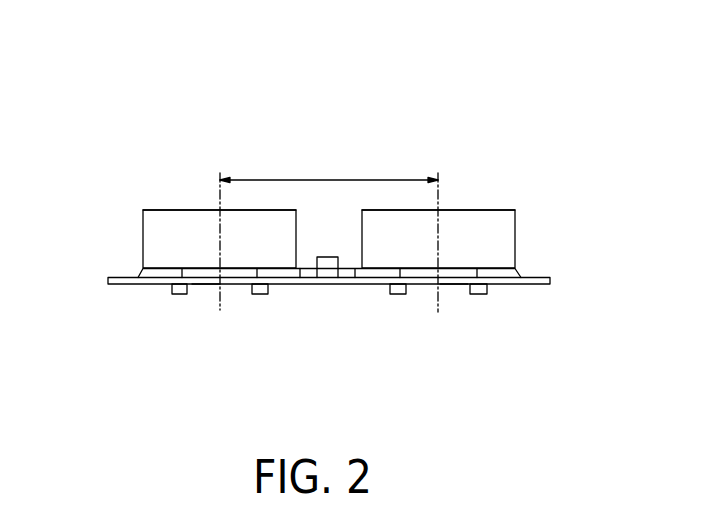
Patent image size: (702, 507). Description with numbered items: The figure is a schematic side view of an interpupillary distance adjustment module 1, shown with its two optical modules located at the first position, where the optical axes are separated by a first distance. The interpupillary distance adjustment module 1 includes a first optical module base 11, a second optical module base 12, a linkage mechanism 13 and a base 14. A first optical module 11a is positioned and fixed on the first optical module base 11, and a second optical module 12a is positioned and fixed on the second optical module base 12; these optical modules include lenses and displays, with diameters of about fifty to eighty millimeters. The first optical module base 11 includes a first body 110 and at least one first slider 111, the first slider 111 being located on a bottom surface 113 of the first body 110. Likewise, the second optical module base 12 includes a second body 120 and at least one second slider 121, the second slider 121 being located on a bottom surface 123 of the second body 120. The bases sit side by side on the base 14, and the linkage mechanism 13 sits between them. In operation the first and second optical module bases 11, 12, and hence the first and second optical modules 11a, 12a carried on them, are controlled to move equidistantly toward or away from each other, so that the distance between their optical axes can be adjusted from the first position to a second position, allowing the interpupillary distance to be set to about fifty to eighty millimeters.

The interpupillary distance adjustment module 1 is at (168, 104).
The first optical module base 11 is at (138, 268).
The first optical module 11a is at (153, 227).
The second optical module base 12 is at (517, 273).
The second optical module 12a is at (502, 230).
The linkage mechanism 13 is at (327, 262).
The base 14 is at (108, 282).
The first body 110 is at (278, 276).
The first slider 111 is at (178, 294).
The bottom surface 113 is at (205, 285).
The second body 120 is at (372, 276).
The second slider 121 is at (478, 294).
The bottom surface 123 is at (457, 285).